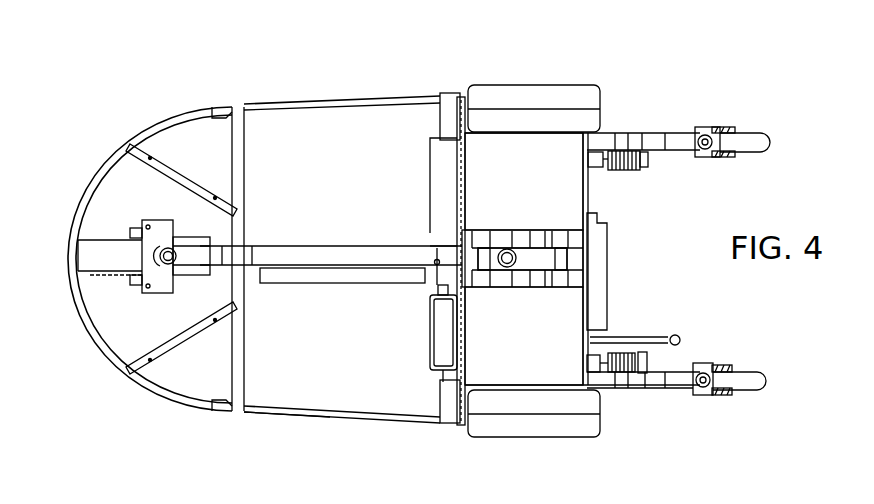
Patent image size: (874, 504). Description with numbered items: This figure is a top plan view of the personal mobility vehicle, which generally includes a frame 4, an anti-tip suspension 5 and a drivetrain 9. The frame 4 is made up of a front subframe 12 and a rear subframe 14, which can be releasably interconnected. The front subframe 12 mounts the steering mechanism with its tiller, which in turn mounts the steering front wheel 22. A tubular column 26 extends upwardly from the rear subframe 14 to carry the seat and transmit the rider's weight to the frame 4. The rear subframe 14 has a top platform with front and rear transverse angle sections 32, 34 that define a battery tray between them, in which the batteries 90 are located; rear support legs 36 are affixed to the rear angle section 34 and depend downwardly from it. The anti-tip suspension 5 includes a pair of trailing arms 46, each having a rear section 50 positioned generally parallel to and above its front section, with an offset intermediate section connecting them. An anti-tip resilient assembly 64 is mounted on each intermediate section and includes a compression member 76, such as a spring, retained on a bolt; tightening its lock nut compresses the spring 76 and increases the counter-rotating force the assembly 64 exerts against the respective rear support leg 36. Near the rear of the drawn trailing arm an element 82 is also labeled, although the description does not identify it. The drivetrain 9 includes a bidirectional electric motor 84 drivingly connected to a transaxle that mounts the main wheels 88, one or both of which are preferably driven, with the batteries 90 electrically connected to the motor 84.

The frame 4 is at (166, 420).
The anti-tip suspension 5 is at (763, 367).
The drivetrain 9 is at (492, 437).
The front subframe 12 is at (148, 116).
The rear subframe 14 is at (426, 138).
The steering front wheel 22 is at (106, 231).
The tubular column 26 is at (516, 247).
The front transverse angle section 32 is at (461, 143).
The rear transverse angle section 34 is at (590, 192).
The rear support legs 36 is at (598, 169).
The trailing arms 46 is at (633, 393).
The trailing arm rear section 50 is at (675, 366).
The anti-tip resilient assembly 64 is at (652, 168).
The compression member 76 is at (622, 354).
The handle grip 82 is at (772, 148).
The electric motor 84 is at (609, 271).
The main wheels 88 is at (600, 434).
The batteries 90 is at (493, 156).